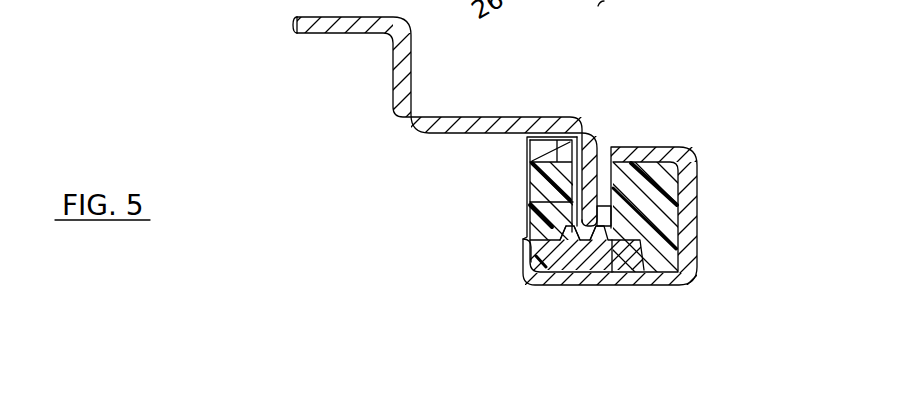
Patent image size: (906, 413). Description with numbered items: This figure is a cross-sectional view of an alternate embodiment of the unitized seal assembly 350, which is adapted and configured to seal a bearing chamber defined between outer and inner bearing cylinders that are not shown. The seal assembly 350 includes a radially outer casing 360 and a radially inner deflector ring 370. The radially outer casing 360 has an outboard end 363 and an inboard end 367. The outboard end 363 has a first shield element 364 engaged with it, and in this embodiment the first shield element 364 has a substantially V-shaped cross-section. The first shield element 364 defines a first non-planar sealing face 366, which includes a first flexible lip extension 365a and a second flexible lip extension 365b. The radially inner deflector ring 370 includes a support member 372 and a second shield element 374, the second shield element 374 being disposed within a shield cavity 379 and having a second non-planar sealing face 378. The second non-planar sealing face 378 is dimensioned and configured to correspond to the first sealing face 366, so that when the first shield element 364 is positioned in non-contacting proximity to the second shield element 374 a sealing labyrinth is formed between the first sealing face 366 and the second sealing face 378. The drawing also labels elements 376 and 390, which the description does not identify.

The seal assembly 350 is at (705, 75).
The radially outer casing 360 is at (455, 117).
The outboard end 363 is at (302, 33).
The first shield element 364 is at (640, 268).
The first flexible lip extension 365a is at (558, 268).
The second flexible lip extension 365b is at (592, 268).
The first non-planar sealing face 366 is at (580, 268).
The inboard end 367 is at (585, 222).
The radially inner deflector ring 370 is at (698, 193).
The support member 372 is at (667, 147).
The second shield element 374 is at (665, 237).
The housing bottom wall 376 is at (523, 256).
The second non-planar sealing face 378 is at (612, 273).
The shield cavity 379 is at (604, 206).
The retainer 390 is at (527, 141).